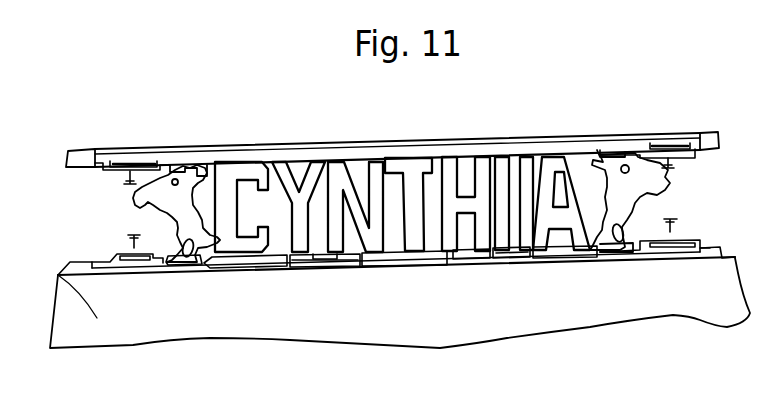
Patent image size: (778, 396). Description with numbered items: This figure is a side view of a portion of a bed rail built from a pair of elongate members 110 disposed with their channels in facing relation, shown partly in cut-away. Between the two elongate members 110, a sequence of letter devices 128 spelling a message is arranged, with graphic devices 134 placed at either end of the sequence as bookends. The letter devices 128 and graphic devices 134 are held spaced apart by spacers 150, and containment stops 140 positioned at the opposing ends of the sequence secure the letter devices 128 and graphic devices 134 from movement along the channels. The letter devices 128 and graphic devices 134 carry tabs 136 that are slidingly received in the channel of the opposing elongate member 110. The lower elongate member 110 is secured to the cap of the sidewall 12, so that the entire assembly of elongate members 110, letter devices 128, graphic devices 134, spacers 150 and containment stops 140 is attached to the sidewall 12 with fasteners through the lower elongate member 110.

The sidewall 12 is at (60, 275).
The elongate member 110 is at (470, 150).
The letter device 128 is at (310, 172).
The graphic device 134 is at (205, 166).
The tab 136 is at (202, 272).
The containment stop 140 is at (137, 163).
The spacer 150 is at (328, 257).